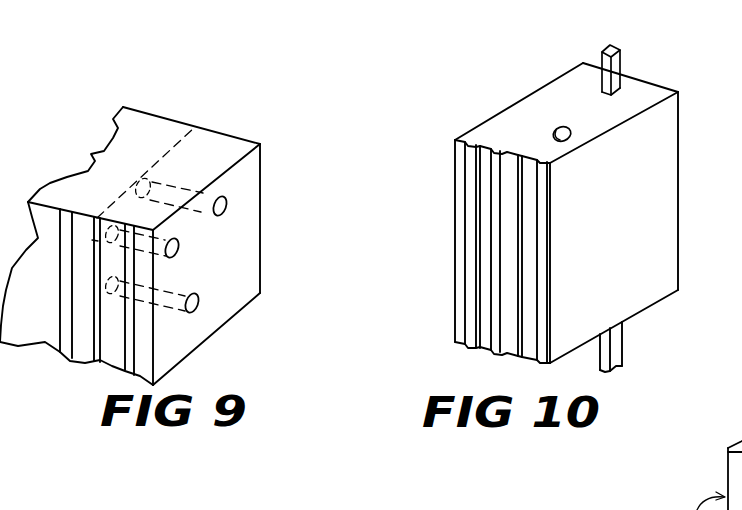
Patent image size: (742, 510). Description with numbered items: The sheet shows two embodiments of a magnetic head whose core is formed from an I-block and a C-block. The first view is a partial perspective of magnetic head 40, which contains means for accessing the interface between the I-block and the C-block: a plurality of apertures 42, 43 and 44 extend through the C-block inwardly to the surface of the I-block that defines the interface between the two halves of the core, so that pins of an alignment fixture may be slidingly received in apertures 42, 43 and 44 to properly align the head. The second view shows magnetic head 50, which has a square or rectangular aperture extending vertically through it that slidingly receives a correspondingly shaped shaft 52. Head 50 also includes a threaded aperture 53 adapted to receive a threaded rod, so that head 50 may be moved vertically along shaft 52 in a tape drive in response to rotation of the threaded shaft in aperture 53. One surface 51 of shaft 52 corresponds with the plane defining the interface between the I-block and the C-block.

In FIG. 9, the magnetic head 40 is at (172, 246).
In FIG. 9, the aperture 42 is at (245, 198).
In FIG. 9, the aperture 43 is at (180, 247).
In FIG. 9, the aperture 44 is at (235, 294).
In FIG. 10, the magnetic head 50 is at (597, 204).
In FIG. 10, the surface of shaft 51 is at (623, 62).
In FIG. 10, the shaft 52 is at (598, 53).
In FIG. 10, the threaded aperture 53 is at (556, 128).